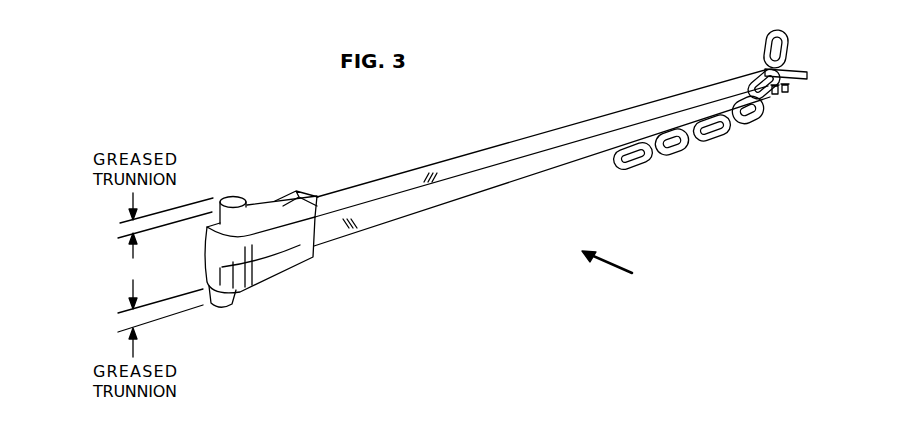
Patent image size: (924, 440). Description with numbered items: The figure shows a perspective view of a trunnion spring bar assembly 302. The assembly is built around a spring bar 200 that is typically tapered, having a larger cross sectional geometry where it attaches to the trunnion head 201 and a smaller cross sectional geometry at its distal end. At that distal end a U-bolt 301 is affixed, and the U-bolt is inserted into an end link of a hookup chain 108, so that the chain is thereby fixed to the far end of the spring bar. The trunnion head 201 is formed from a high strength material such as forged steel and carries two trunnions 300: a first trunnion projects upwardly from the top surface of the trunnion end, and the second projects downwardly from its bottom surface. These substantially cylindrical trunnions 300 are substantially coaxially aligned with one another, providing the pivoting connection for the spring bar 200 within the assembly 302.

The hookup chain 108 is at (756, 120).
The spring bar 200 is at (447, 202).
The trunnion head 201 is at (292, 270).
The trunnion 300 is at (236, 194).
The U-bolt 301 is at (790, 38).
The trunnion spring bar assembly 302 is at (624, 270).